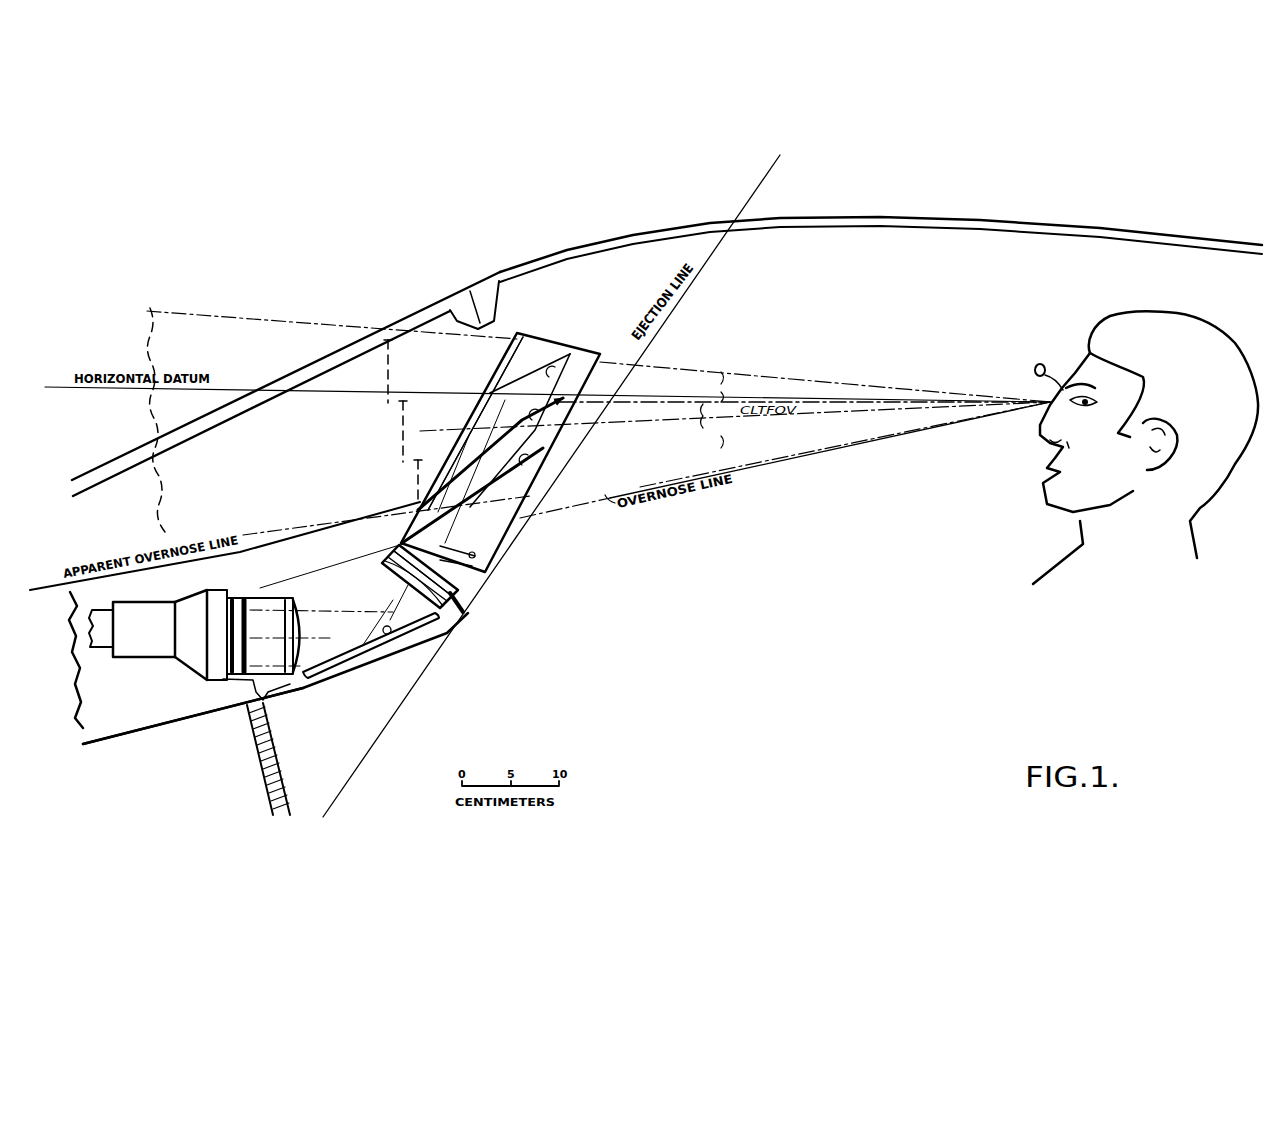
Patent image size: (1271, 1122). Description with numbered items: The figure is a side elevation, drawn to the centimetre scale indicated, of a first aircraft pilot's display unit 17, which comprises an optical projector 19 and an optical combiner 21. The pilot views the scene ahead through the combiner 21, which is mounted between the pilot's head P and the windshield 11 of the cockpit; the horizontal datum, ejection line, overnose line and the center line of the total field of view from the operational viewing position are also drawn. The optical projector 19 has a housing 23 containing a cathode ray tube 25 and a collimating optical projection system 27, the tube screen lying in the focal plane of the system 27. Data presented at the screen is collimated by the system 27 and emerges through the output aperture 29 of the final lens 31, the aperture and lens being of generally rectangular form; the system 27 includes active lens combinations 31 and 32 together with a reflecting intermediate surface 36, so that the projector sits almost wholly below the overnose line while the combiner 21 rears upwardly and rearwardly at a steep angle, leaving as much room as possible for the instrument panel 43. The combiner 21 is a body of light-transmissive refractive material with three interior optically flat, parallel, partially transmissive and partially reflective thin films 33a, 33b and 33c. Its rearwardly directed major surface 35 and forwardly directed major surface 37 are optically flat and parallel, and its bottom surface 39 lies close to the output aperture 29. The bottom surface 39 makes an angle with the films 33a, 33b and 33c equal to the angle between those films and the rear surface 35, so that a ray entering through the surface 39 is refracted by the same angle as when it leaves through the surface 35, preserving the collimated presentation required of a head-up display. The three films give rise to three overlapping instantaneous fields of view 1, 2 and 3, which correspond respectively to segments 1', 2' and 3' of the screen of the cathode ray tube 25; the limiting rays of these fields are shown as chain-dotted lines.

The windshield 11 is at (120, 456).
The pilot's display unit 17 is at (408, 668).
The optical projector 19 is at (115, 748).
The optical combiner 21 is at (575, 343).
The housing 23 is at (217, 717).
The cathode ray tube 25 is at (140, 657).
The collimating optical projection system 27 is at (312, 568).
The output aperture 29 is at (474, 566).
The final lens 31 is at (459, 613).
The lens combination 32 is at (263, 691).
The thin film 33a is at (547, 470).
The thin film 33b is at (560, 422).
The thin film 33c is at (600, 362).
The rearwardly directed major surface 35 is at (587, 383).
The reflecting intermediate surface 36 is at (386, 634).
The forwardly directed major surface 37 is at (493, 370).
The bottom surface 39 is at (478, 556).
The instrument panel 43 is at (268, 798).
The instantaneous field of view 1 is at (405, 480).
The instantaneous field of view 2 is at (389, 436).
The instantaneous field of view 3 is at (375, 371).
The screen segment 1' is at (210, 596).
The screen segment 2' is at (202, 609).
The screen segment 3' is at (190, 615).
The pilot's head P is at (1172, 384).